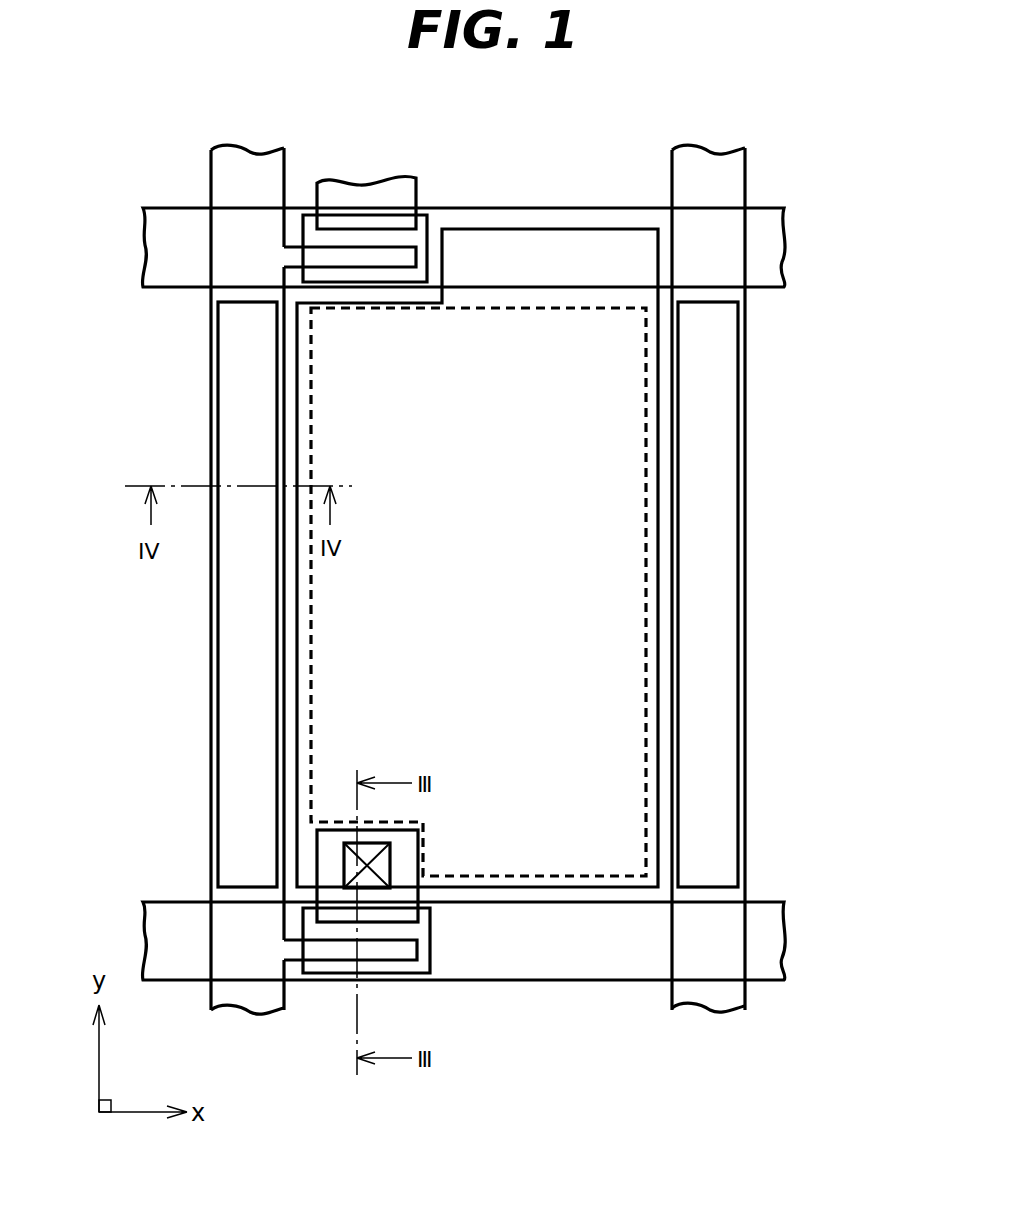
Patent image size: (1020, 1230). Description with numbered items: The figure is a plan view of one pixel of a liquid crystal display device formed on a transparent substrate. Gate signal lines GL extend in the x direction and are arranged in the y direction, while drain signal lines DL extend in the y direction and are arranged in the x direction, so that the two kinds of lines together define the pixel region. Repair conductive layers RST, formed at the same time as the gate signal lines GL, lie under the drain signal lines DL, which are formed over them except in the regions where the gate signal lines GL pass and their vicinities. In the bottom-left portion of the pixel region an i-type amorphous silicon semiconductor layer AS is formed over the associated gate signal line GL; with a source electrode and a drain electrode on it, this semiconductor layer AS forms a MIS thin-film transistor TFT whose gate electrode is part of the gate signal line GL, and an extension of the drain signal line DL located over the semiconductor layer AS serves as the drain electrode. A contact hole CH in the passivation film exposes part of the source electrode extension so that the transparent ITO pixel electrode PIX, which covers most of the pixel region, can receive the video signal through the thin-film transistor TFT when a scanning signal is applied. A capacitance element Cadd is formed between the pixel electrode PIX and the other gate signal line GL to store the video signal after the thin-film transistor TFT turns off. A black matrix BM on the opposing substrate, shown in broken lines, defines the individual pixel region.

The gate signal line GL is at (785, 233).
The drain signal line DL is at (267, 1007).
The repair conductive layer RST is at (218, 638).
The pixel electrode PIX is at (658, 595).
The capacitance element Cadd is at (592, 245).
The black matrix BM is at (648, 392).
The thin-film transistor TFT is at (390, 985).
The semiconductor layer AS is at (430, 940).
The contact hole CH is at (344, 857).